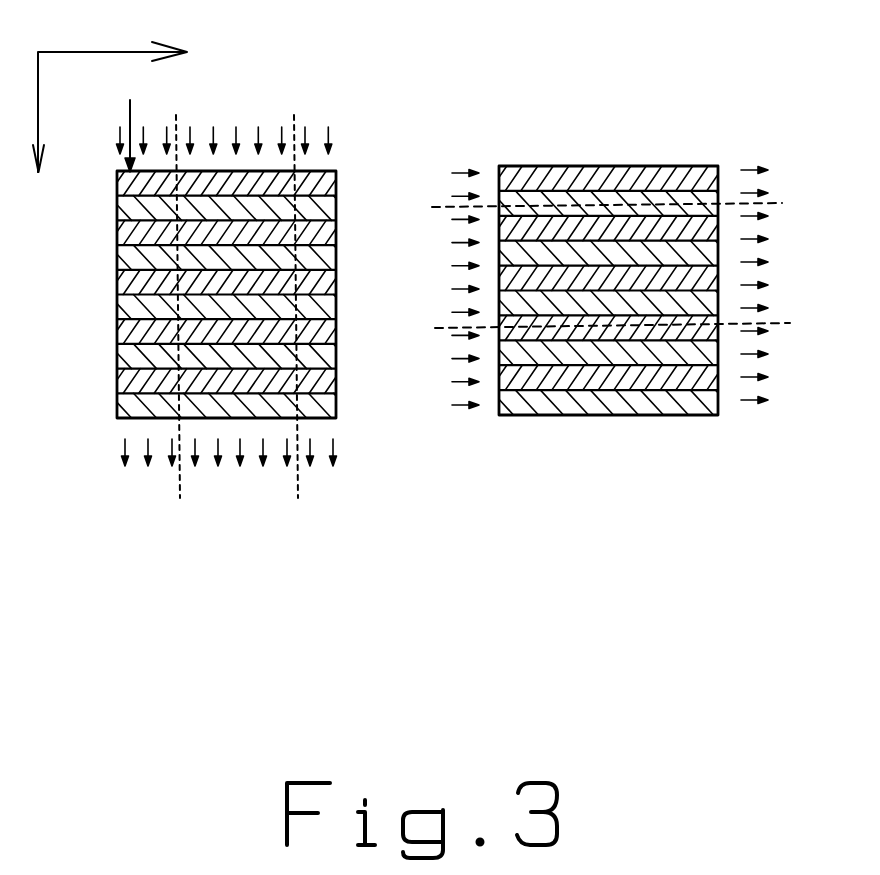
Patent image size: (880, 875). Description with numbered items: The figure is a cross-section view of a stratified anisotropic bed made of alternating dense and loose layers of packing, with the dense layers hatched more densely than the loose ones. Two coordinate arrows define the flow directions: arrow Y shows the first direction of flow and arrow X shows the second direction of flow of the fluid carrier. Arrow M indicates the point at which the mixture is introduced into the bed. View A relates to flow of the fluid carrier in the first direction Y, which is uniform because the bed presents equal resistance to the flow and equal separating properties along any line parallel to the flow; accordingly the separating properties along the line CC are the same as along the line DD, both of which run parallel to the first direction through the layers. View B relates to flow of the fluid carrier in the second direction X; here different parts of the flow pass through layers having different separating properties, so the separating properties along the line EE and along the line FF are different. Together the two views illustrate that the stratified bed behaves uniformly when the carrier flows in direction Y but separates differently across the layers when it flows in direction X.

The view A of stratified bed A is at (251, 691).
The view B of stratified bed B is at (593, 705).
The arrow M is at (143, 97).
The line CC C is at (192, 86).
The line DD D is at (285, 82).
The line EE E is at (822, 205).
The line FF F is at (416, 352).
The arrow X is at (227, 53).
The arrow Y is at (38, 227).